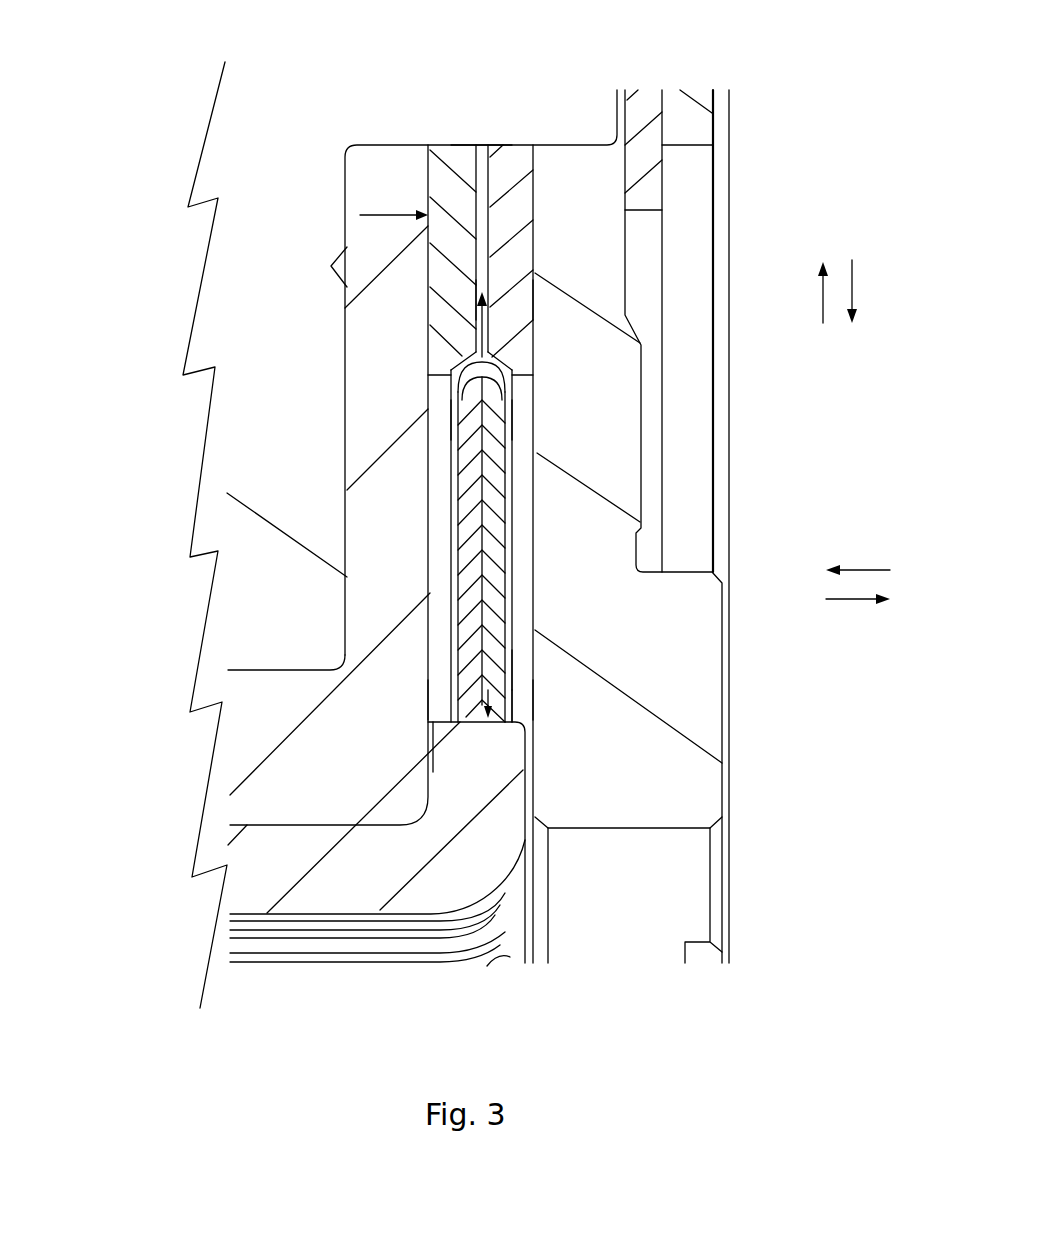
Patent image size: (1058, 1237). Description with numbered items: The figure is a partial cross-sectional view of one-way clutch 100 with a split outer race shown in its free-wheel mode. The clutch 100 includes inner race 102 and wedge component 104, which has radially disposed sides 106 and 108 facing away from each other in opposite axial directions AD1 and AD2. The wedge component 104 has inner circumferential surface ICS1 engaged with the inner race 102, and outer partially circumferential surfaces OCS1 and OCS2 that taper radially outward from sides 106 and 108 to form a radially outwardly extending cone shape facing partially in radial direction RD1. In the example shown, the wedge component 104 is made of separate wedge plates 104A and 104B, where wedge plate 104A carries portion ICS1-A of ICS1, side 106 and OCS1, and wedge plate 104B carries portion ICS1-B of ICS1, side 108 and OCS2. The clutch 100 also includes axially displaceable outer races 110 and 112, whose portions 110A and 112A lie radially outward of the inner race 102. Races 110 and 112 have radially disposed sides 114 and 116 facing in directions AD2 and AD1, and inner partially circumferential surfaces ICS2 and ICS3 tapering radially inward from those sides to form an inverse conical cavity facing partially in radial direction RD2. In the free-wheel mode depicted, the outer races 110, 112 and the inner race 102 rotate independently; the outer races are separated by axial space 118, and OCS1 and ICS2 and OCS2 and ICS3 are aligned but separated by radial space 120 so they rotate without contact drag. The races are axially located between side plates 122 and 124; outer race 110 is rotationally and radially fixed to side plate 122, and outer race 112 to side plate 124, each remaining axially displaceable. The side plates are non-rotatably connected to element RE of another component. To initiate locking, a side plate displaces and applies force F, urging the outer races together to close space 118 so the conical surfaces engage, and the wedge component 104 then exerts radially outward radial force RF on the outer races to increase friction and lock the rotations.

The one-way clutch 100 is at (784, 121).
The inner race 102 is at (512, 880).
The wedge component 104 is at (440, 516).
The wedge plate 104A is at (467, 657).
The wedge plate 104B is at (496, 415).
The radially disposed side 106 is at (462, 590).
The radially disposed side 108 is at (503, 470).
The outer race 110 is at (437, 140).
The portion of outer race 110A is at (383, 155).
The outer race 112 is at (497, 132).
The portion of outer race 112A is at (503, 247).
The radially disposed side 114 is at (463, 160).
The radially disposed side 116 is at (517, 175).
The axial space 118 is at (483, 152).
The radial space 120 is at (467, 367).
The side plate 122 is at (272, 721).
The side plate 124 is at (685, 790).
The force F is at (388, 212).
The radial force RF is at (346, 250).
The element RE is at (246, 458).
The inner circumferential surface ICS1 is at (490, 698).
The portion of inner circumferential surface ICS1-A is at (467, 707).
The portion of inner circumferential surface ICS1-B is at (496, 720).
The inner partially circumferential surface ICS2 is at (470, 305).
The inner partially circumferential surface ICS3 is at (537, 313).
The outer partially circumferential surface OCS1 is at (476, 392).
The outer partially circumferential surface OCS2 is at (496, 385).
The radial direction RD1 is at (822, 295).
The radial direction RD2 is at (855, 295).
The axial direction AD1 is at (858, 565).
The axial direction AD2 is at (858, 604).